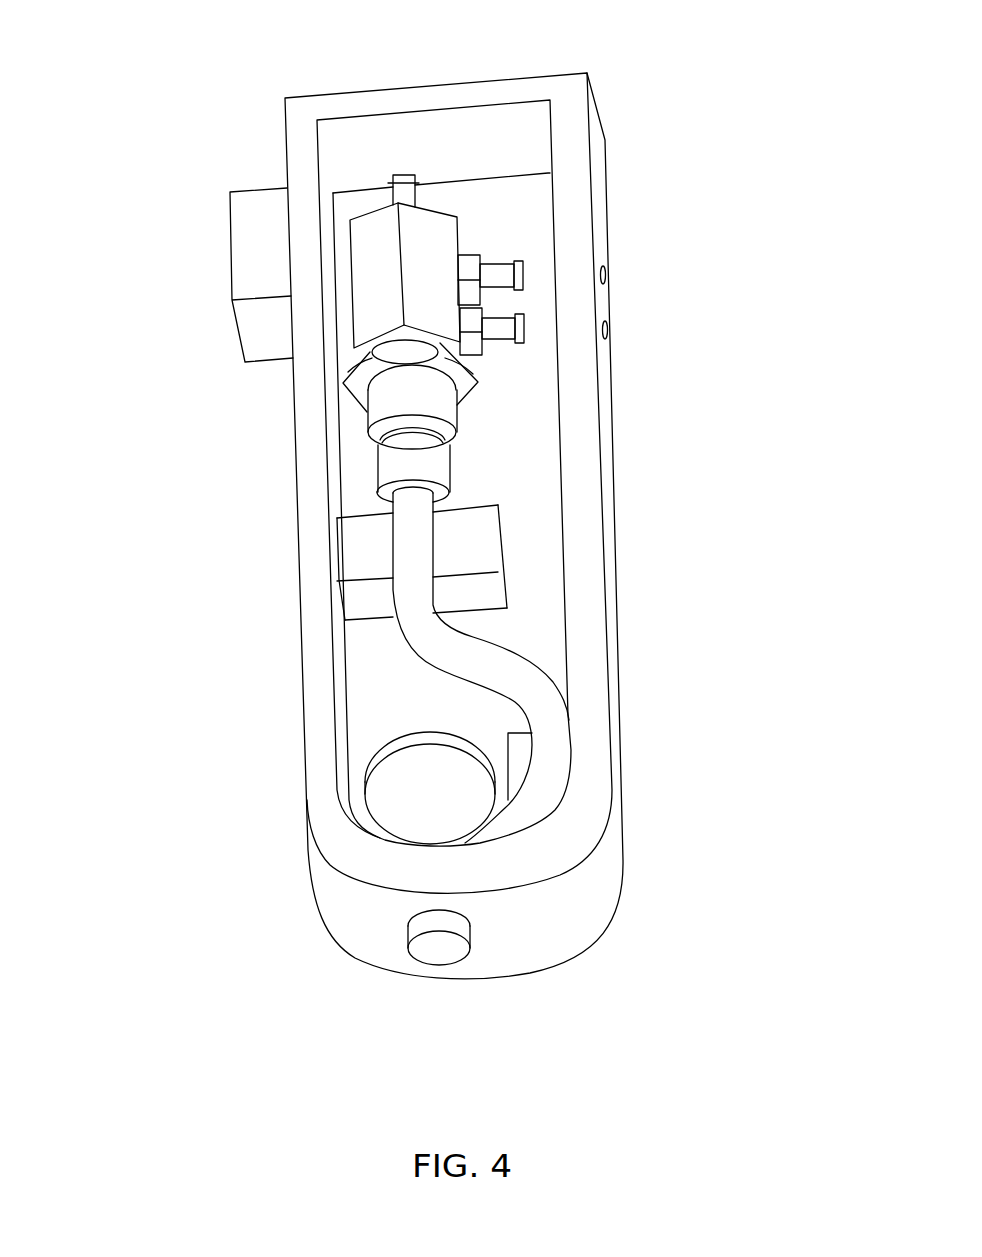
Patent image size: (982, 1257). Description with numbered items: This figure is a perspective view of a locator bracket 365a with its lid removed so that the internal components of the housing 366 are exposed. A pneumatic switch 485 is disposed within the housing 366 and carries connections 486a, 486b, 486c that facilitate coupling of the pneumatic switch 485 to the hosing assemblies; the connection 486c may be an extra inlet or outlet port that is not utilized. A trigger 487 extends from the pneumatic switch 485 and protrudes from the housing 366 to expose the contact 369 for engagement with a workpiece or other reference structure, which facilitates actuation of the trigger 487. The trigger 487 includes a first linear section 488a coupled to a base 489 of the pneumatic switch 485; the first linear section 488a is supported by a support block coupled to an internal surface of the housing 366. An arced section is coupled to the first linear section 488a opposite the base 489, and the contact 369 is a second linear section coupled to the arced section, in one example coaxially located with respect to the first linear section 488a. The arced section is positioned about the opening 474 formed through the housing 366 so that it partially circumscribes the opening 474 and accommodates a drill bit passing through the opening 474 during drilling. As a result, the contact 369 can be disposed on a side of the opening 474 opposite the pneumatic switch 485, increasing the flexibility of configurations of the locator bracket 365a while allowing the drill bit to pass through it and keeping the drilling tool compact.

The locator bracket 365a is at (255, 149).
The housing 366 is at (588, 753).
The contact 369 is at (433, 950).
The opening 474 is at (397, 790).
The pneumatic switch 485 is at (375, 276).
The connection 486a is at (500, 330).
The connection 486b is at (499, 272).
The connection 486c is at (405, 195).
The trigger 487 is at (486, 664).
The first linear section 488a is at (412, 562).
The base 489 is at (410, 398).